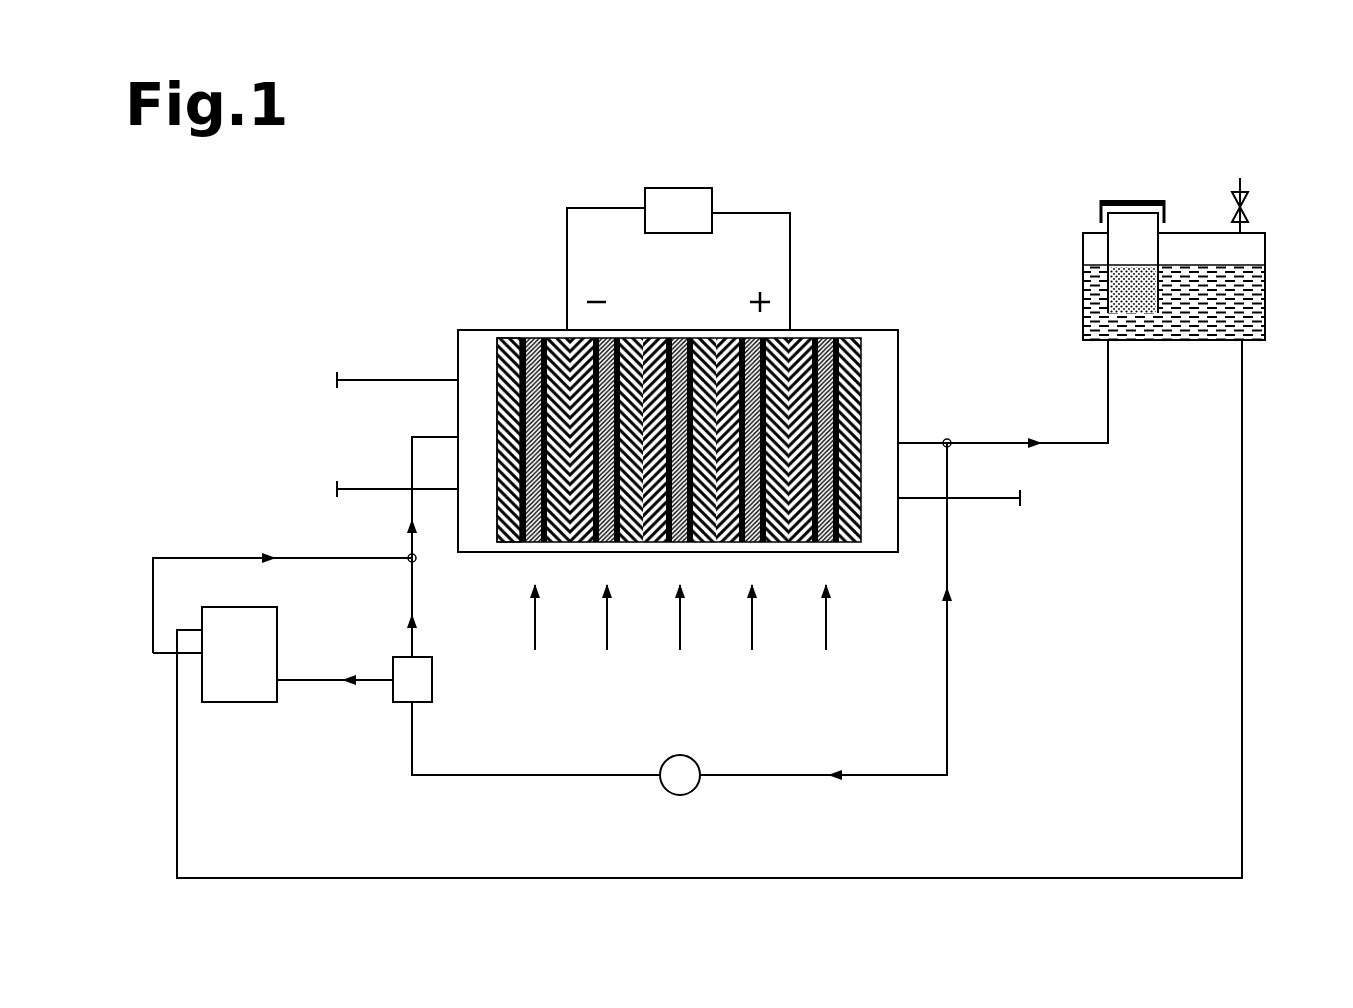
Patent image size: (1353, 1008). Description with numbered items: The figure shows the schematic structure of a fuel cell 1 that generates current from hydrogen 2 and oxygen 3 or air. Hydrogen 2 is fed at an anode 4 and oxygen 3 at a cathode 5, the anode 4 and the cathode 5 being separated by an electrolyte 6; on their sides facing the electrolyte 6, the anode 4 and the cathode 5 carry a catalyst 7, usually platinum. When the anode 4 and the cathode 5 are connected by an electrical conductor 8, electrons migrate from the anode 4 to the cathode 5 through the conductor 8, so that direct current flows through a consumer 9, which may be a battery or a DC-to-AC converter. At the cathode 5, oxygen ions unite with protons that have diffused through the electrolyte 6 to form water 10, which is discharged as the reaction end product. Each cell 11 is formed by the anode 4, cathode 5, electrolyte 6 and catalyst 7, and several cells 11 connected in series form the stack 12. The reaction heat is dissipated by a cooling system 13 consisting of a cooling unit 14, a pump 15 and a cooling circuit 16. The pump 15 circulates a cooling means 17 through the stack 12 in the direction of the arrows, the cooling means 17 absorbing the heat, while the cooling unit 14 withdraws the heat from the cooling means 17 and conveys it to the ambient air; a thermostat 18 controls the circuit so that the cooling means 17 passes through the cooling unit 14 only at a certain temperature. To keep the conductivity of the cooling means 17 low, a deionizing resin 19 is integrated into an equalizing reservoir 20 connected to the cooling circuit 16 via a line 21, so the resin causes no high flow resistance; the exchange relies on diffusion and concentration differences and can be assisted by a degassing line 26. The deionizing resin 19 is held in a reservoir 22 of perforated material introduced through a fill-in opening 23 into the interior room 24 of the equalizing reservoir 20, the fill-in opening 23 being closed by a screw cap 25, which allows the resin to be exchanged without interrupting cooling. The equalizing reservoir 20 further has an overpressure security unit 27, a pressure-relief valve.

The fuel cell 1 is at (390, 165).
The hydrogen 2 is at (340, 360).
The oxygen 3 is at (340, 467).
The anode 4 is at (497, 337).
The cathode 5 is at (557, 345).
The electrolyte 6 is at (533, 345).
The catalyst 7 is at (540, 340).
The electrical conductor 8 is at (750, 210).
The consumer 9 is at (680, 210).
The water 10 is at (1003, 518).
The cell 11 is at (680, 636).
The stack 12 is at (483, 367).
The cooling system 13 is at (263, 495).
The cooling unit 14 is at (238, 680).
The pump 15 is at (678, 777).
The cooling circuit 16 is at (952, 703).
The cooling means 17 is at (1203, 305).
The thermostat 18 is at (415, 680).
The deionizing resin 19 is at (1135, 313).
The equalizing reservoir 20 is at (1070, 177).
The line 21 is at (1075, 450).
The reservoir 22 is at (1122, 237).
The fill-in opening 23 is at (1098, 223).
The interior room 24 is at (1247, 247).
The screw cap 25 is at (1132, 203).
The degassing line 26 is at (1057, 863).
The overpressure security unit 27 is at (1250, 180).